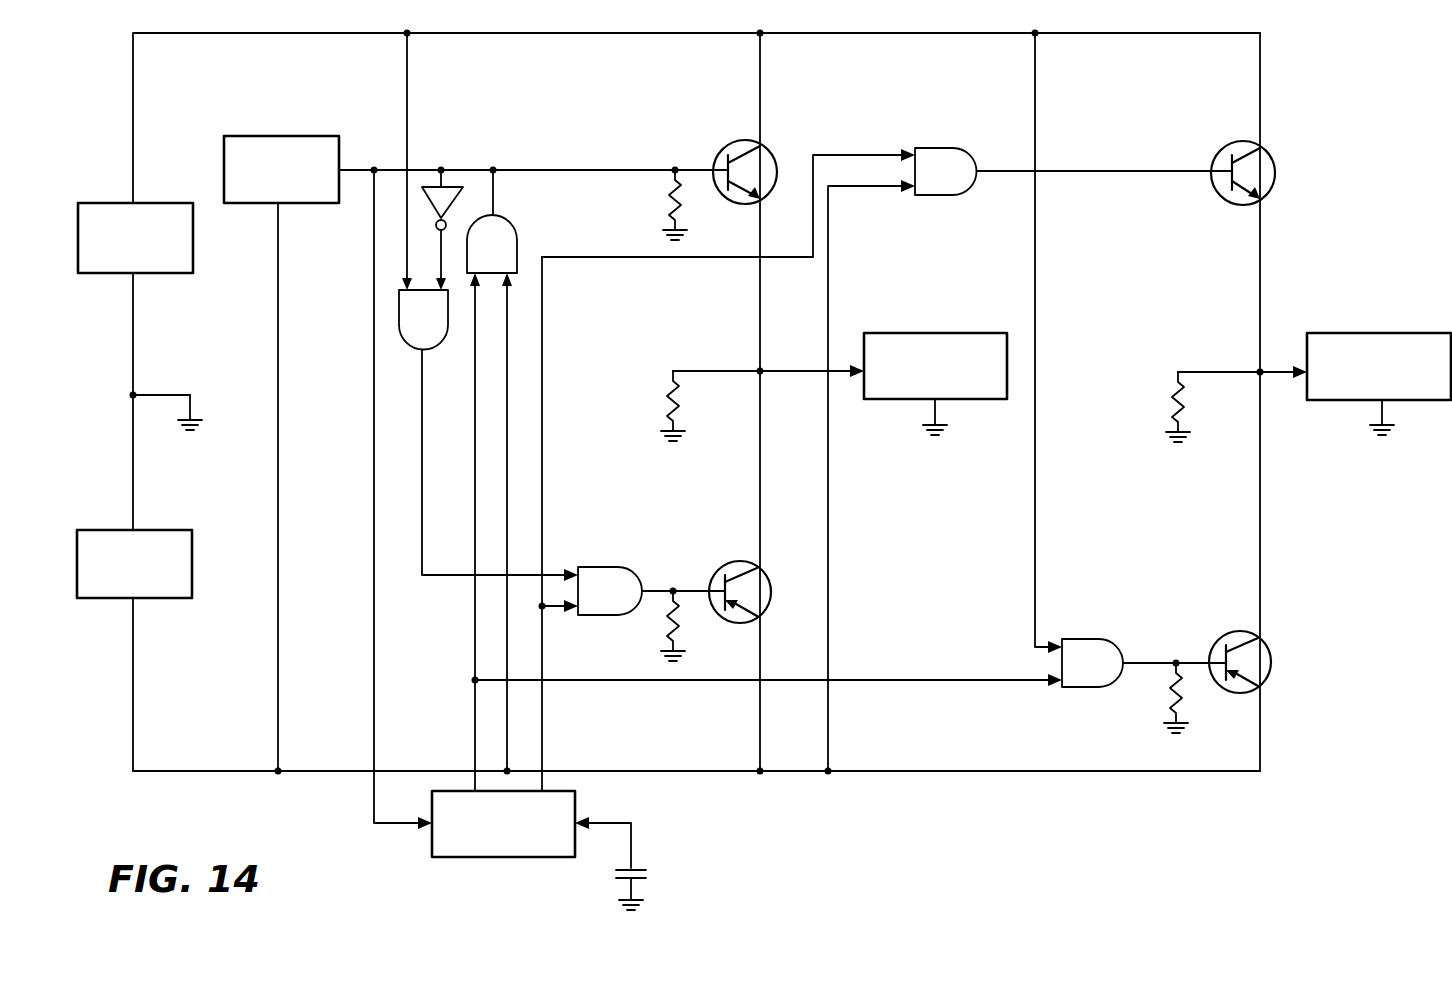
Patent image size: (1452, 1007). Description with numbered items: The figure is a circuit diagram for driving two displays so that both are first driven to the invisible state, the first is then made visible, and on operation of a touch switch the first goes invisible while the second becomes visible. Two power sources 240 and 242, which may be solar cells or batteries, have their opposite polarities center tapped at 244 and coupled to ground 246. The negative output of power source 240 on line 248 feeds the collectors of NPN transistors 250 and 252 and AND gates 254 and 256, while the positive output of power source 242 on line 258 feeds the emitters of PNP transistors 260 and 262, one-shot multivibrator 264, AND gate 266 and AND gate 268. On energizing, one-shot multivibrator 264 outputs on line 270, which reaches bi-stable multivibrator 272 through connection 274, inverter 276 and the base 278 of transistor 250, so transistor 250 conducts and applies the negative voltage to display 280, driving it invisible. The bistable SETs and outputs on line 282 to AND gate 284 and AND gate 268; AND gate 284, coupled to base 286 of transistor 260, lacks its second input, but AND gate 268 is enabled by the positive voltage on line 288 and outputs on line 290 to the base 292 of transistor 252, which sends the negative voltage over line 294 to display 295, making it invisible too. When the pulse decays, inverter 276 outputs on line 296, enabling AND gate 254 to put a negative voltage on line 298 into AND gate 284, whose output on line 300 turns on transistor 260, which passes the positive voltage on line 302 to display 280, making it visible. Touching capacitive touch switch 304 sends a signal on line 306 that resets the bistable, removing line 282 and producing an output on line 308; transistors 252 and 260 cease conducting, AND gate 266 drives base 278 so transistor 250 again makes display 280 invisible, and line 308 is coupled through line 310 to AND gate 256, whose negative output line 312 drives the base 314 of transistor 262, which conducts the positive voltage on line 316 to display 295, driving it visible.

The power source 240 is at (95, 203).
The power source 242 is at (90, 530).
The center tap 244 is at (133, 395).
The ground 246 is at (190, 408).
The line 248 is at (133, 62).
The NPN transistor 250 is at (738, 143).
The NPN transistor 252 is at (1243, 142).
The AND gate 254 is at (415, 345).
The AND gate 256 is at (1100, 690).
The line 258 is at (178, 771).
The PNP transistor 260 is at (735, 620).
The PNP transistor 262 is at (1265, 680).
The one-shot multivibrator 264 is at (282, 136).
The AND gate 266 is at (516, 232).
The AND gate 268 is at (935, 150).
The line 270 is at (477, 170).
The bi-stable multivibrator 272 is at (430, 845).
The connection 274 is at (374, 797).
The inverter 276 is at (452, 190).
The base 278 is at (718, 163).
The display 280 is at (955, 307).
The line 282 is at (542, 745).
The AND gate 284 is at (590, 568).
The base 286 is at (718, 568).
The line 288 is at (828, 535).
The line 290 is at (1005, 170).
The base 292 is at (1220, 160).
The line 294 is at (1275, 370).
The display 295 is at (1395, 335).
The line 296 is at (441, 262).
The line 298 is at (445, 578).
The line 300 is at (655, 590).
The line 302 is at (760, 520).
The capacitive touch switch 304 is at (650, 875).
The line 306 is at (635, 825).
The line 308 is at (475, 716).
The line 310 is at (955, 682).
The output line 312 is at (1140, 662).
The base 314 is at (1215, 640).
The line 316 is at (1260, 511).